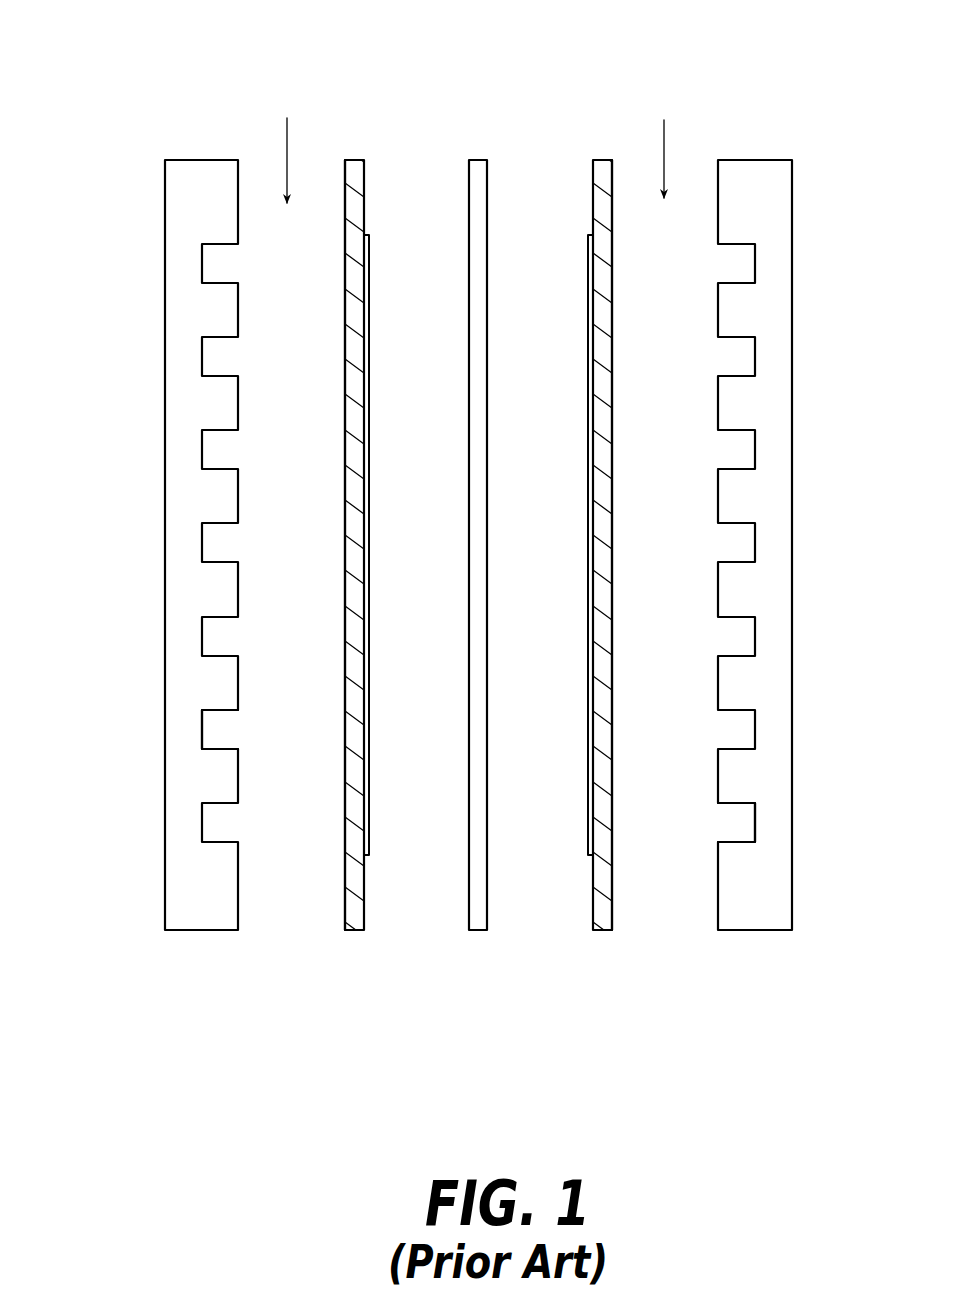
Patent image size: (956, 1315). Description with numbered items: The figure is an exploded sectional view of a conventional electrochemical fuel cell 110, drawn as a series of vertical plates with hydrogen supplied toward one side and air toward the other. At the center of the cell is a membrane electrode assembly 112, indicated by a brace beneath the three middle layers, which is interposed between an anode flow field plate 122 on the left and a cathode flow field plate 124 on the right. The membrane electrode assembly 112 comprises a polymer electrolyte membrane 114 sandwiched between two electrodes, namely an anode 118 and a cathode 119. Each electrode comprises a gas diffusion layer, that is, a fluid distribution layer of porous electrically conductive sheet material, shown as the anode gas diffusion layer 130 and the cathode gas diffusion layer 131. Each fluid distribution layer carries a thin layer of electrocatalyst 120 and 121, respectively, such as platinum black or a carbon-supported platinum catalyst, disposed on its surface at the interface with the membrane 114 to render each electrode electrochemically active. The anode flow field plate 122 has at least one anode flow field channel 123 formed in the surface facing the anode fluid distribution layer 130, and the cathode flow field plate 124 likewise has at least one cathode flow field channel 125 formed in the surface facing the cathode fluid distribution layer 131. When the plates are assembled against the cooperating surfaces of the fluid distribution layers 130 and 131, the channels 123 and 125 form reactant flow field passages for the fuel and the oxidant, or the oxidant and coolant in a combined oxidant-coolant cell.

The fuel cell 110 is at (750, 105).
The membrane electrode assembly 112 is at (480, 577).
The polymer electrolyte membrane 114 is at (478, 940).
The anode 118 is at (337, 934).
The cathode 119 is at (621, 934).
The electrocatalyst layer 120 is at (369, 312).
The electrocatalyst layer 121 is at (588, 270).
The anode flow field plate 122 is at (183, 910).
The anode flow field channel 123 is at (215, 727).
The cathode flow field plate 124 is at (762, 910).
The cathode flow field channel 125 is at (740, 822).
The anode gas diffusion layer 130 is at (344, 300).
The cathode gas diffusion layer 131 is at (613, 258).